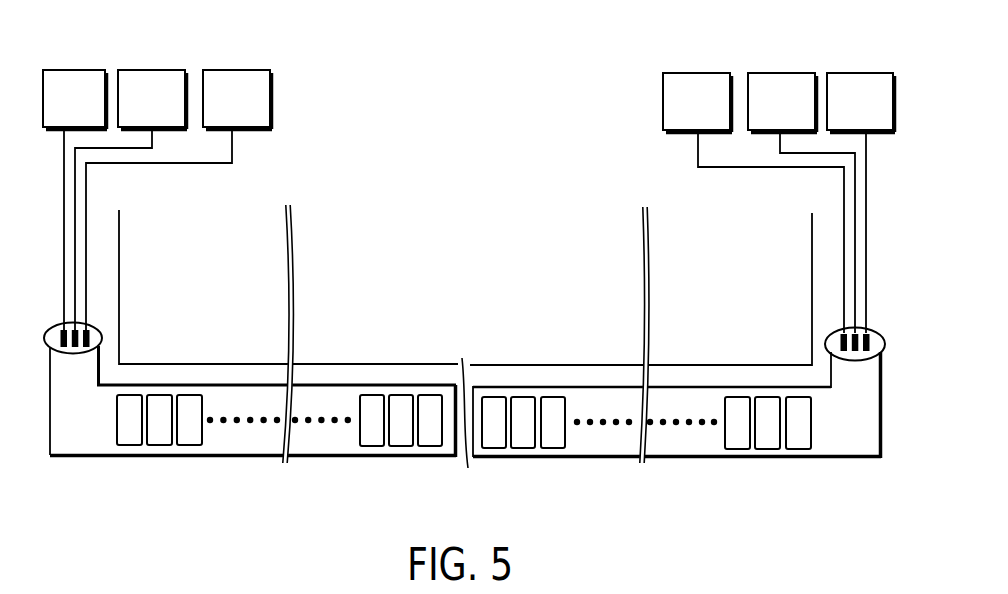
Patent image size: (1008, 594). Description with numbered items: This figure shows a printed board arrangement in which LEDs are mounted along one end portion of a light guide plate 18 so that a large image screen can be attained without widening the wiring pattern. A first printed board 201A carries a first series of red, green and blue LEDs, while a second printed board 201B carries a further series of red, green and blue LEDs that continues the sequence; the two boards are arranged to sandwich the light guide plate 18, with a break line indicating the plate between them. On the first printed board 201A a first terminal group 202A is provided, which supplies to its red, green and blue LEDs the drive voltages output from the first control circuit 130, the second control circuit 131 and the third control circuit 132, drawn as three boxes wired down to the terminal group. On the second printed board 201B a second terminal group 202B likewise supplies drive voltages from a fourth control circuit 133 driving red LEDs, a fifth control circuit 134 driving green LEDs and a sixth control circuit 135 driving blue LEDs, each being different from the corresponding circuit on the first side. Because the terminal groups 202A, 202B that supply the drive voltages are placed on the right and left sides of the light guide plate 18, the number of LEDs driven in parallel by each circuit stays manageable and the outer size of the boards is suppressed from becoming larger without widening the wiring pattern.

The first control circuit 130 is at (68, 70).
The second control circuit 131 is at (147, 70).
The third control circuit 132 is at (232, 70).
The fourth control circuit 133 is at (700, 73).
The fifth control circuit 134 is at (778, 73).
The sixth control circuit 135 is at (863, 73).
The first terminal group 202A is at (92, 328).
The second terminal group 202B is at (837, 328).
The first printed board 201A is at (77, 449).
The second printed board 201B is at (857, 453).
The light guide plate 18 is at (470, 430).